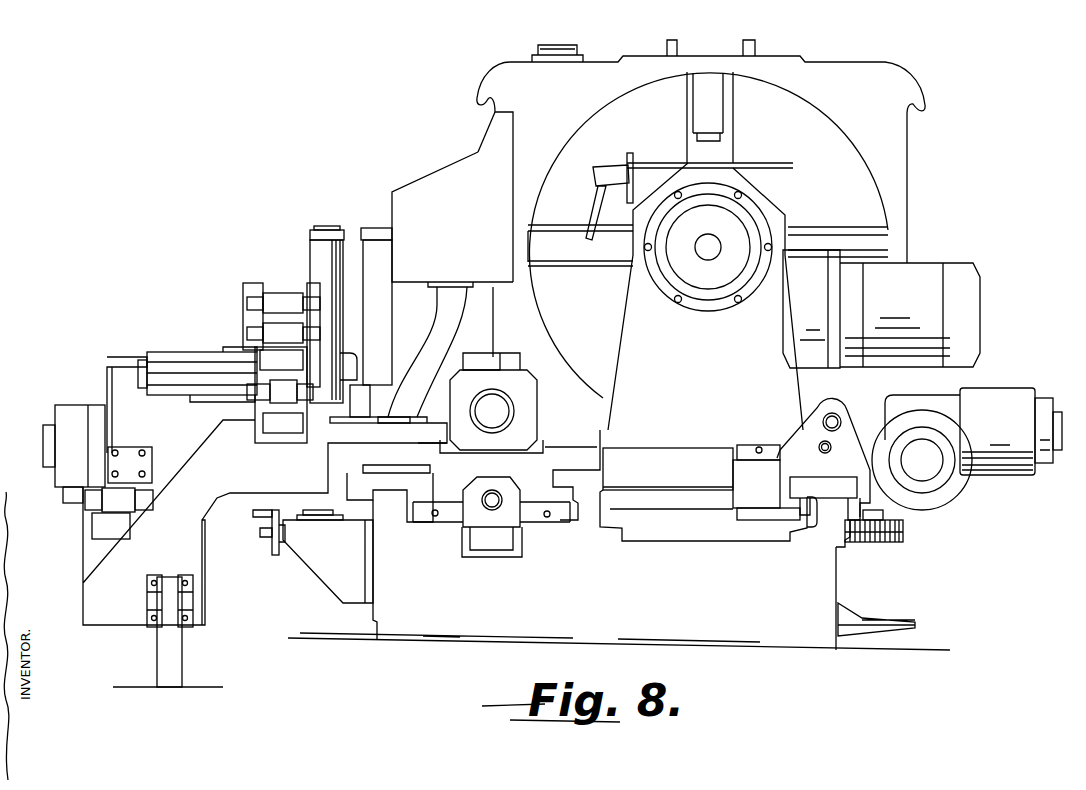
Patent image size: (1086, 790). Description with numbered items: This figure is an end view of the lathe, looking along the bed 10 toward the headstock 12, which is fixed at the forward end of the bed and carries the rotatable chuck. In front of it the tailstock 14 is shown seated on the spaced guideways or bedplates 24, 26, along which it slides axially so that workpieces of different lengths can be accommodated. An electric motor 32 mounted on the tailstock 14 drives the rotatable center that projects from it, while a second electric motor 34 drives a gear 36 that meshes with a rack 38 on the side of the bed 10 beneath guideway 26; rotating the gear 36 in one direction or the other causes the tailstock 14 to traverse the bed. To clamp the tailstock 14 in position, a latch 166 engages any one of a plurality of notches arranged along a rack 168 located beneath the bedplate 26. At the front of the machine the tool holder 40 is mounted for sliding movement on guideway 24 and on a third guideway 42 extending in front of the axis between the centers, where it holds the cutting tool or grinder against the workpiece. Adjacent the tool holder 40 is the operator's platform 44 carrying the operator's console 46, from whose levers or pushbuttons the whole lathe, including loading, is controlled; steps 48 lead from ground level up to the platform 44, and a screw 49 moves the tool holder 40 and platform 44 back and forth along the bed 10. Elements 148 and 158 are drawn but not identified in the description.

The bed 10 is at (713, 603).
The headstock 12 is at (902, 154).
The tailstock 14 is at (723, 368).
The guideway 24 is at (597, 473).
The guideway 26 is at (822, 485).
The electric motor 32 is at (925, 273).
The electric motor 34 is at (993, 397).
The gear 36 is at (887, 537).
The rack 38 is at (845, 530).
The tool holder 40 is at (195, 352).
The third guideway 42 is at (399, 473).
The operator's platform 44 is at (232, 420).
The operator's console 46 is at (438, 180).
The steps 48 is at (100, 574).
The screw 49 is at (505, 495).
The hole 148 is at (835, 420).
The bracket 158 is at (815, 430).
The latch 166 is at (753, 517).
The rack 168 is at (808, 522).